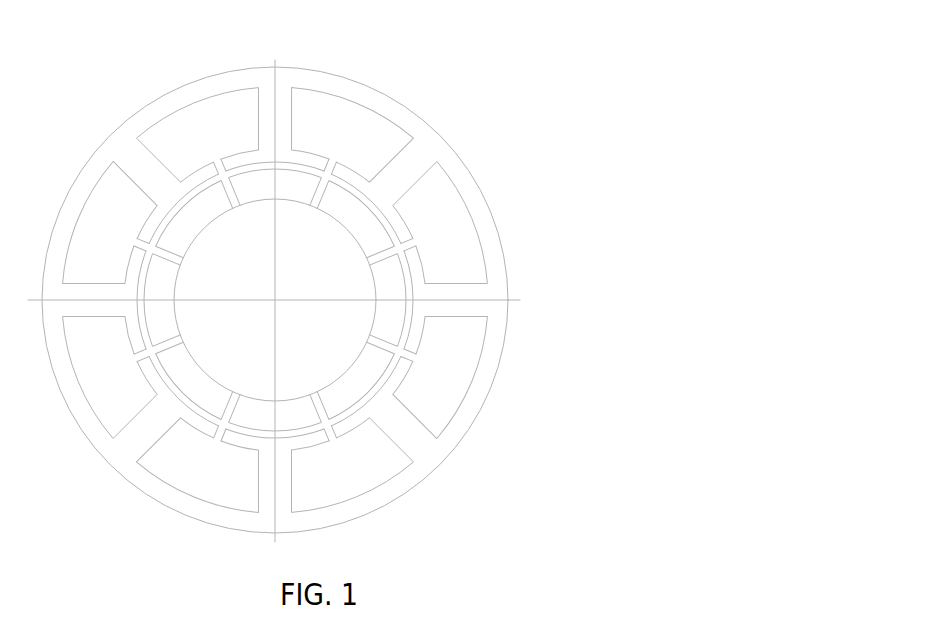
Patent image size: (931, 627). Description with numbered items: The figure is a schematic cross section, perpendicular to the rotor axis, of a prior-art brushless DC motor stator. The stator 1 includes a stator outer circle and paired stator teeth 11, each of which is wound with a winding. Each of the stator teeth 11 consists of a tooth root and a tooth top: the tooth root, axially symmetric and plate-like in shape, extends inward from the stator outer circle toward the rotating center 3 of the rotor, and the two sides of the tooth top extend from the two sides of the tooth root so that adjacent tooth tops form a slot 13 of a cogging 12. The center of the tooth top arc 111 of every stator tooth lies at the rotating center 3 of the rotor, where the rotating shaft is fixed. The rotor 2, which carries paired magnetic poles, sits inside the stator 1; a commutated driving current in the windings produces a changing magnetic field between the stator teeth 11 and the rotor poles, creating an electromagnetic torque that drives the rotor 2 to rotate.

The stator 1 is at (312, 274).
The stator teeth 11 is at (286, 274).
The tooth top arc 111 is at (365, 194).
The cogging 12 is at (368, 125).
The slot 13 is at (221, 168).
The rotor 2 is at (346, 371).
The rotating center 3 is at (275, 300).